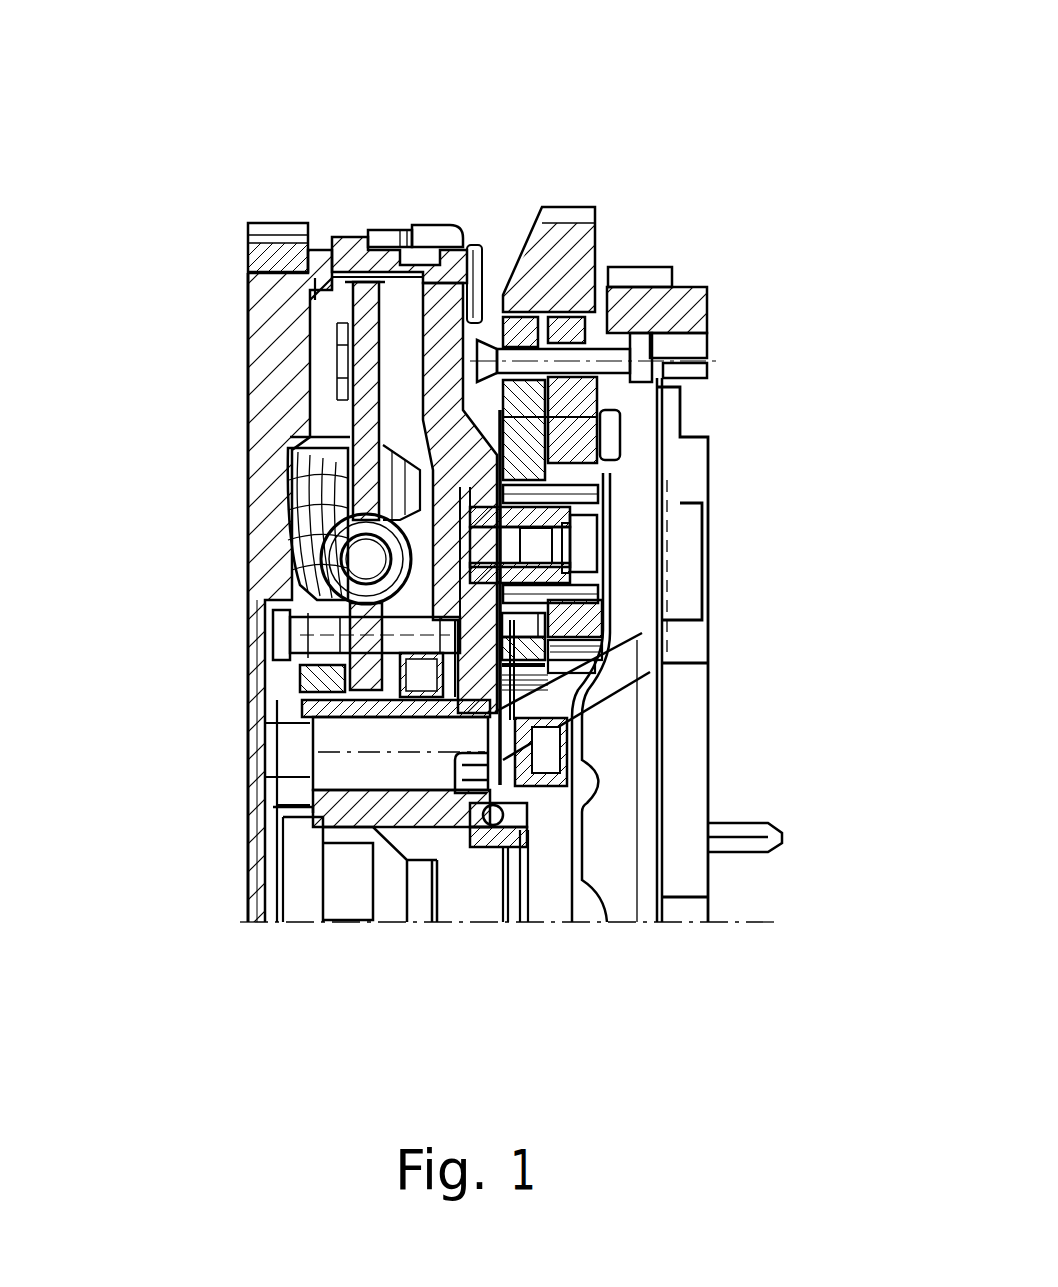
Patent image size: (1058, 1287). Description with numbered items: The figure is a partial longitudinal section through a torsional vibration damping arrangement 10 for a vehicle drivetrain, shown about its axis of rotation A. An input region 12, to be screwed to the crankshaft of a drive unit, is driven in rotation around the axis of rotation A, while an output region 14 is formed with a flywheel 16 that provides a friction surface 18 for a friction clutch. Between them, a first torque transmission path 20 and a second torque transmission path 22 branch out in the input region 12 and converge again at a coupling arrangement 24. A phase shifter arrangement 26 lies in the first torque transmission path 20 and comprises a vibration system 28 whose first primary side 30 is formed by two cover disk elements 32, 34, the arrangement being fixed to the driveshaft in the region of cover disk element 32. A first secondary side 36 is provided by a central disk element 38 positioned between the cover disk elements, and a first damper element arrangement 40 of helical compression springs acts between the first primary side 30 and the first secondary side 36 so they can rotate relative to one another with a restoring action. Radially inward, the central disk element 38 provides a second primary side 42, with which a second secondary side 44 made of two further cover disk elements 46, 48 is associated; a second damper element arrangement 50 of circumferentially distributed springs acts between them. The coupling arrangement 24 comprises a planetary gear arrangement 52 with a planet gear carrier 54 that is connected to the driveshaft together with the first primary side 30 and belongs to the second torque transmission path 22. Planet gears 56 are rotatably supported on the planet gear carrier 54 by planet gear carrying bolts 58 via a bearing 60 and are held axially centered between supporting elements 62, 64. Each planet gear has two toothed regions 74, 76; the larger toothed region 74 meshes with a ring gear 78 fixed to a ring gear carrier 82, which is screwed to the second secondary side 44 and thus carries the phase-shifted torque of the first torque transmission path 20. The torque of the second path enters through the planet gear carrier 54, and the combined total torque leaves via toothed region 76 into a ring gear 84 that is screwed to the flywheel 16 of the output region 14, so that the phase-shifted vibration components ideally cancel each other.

The torsional vibration damping arrangement 10 is at (635, 251).
The input region 12 is at (210, 613).
The output region 14 is at (660, 228).
The flywheel 16 is at (640, 423).
The friction surface 18 is at (677, 504).
The first torque transmission path 20 is at (350, 182).
The second torque transmission path 22 is at (352, 880).
The coupling arrangement 24 is at (640, 555).
The phase shifter arrangement 26 is at (270, 321).
The vibration system 28 is at (390, 259).
The first primary side 30 is at (247, 418).
The cover disk element 32 is at (265, 286).
The cover disk element 34 is at (383, 282).
The first secondary side 36 is at (277, 242).
The central disk element 38 is at (330, 437).
The first damper element arrangement 40 is at (300, 513).
The second primary side 42 is at (282, 585).
The second secondary side 44 is at (384, 630).
The cover disk element 46 is at (330, 692).
The cover disk element 48 is at (392, 662).
The second damper element arrangement 50 is at (320, 540).
The planetary gear arrangement 52 is at (622, 630).
The planet gear carrier 54 is at (422, 808).
The planet gears 56 is at (618, 410).
The planet gear carrying bolts 58 is at (552, 572).
The bearing 60 is at (582, 475).
The supporting element 62 is at (478, 300).
The supporting element 64 is at (612, 545).
The toothed region 74 is at (567, 682).
The toothed region 76 is at (640, 676).
The ring gear 78 is at (513, 330).
The ring gear carrier 82 is at (567, 236).
The ring gear 84 is at (643, 330).
The axis of rotation A is at (742, 922).